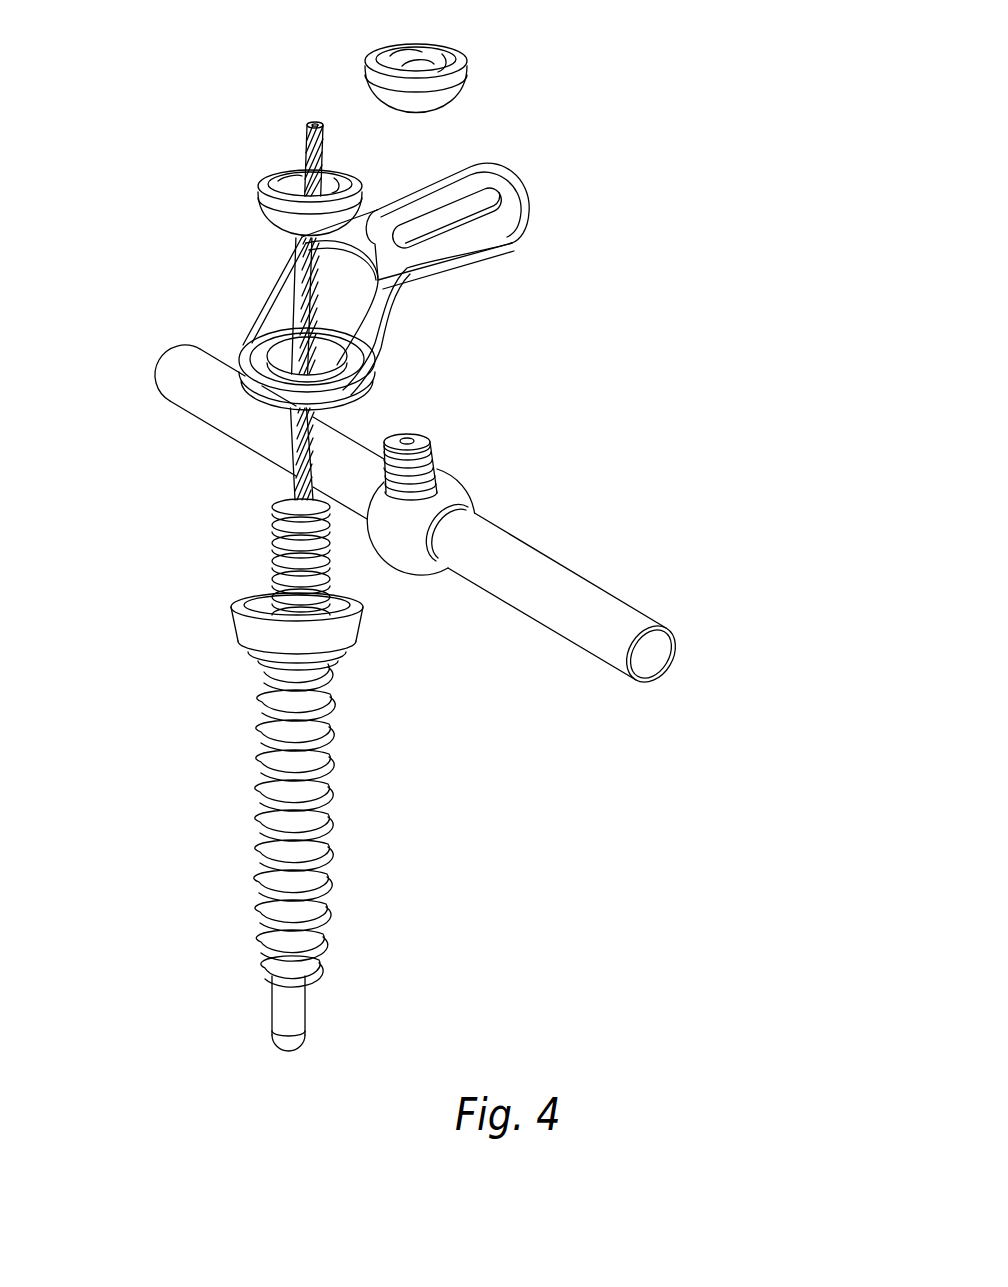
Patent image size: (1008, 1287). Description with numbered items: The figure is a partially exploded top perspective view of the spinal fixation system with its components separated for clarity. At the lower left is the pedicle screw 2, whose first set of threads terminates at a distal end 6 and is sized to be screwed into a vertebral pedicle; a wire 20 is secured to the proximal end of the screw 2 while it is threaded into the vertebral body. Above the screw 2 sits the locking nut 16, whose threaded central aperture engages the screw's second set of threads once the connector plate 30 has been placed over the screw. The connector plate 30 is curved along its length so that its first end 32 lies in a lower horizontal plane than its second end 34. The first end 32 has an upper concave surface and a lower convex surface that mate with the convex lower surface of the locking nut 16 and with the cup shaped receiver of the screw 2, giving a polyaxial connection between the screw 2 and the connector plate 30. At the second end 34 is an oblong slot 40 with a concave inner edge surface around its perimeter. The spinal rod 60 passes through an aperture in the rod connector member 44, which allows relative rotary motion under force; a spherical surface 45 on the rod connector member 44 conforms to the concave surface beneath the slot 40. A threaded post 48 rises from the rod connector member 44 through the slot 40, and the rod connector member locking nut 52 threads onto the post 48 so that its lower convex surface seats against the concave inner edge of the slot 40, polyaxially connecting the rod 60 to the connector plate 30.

The pedicle screw 2 is at (372, 775).
The distal end 6 is at (292, 1008).
The locking nut 16 is at (268, 206).
The wire 20 is at (306, 128).
The connector plate 30 is at (381, 318).
The first end 32 is at (279, 383).
The second end 34 is at (513, 240).
The slot 40 is at (501, 200).
The rod connector member 44 is at (509, 586).
The spherical surface 45 is at (400, 537).
The post 48 is at (440, 448).
The rod connector member locking nut 52 is at (470, 78).
The spinal rod 60 is at (637, 607).